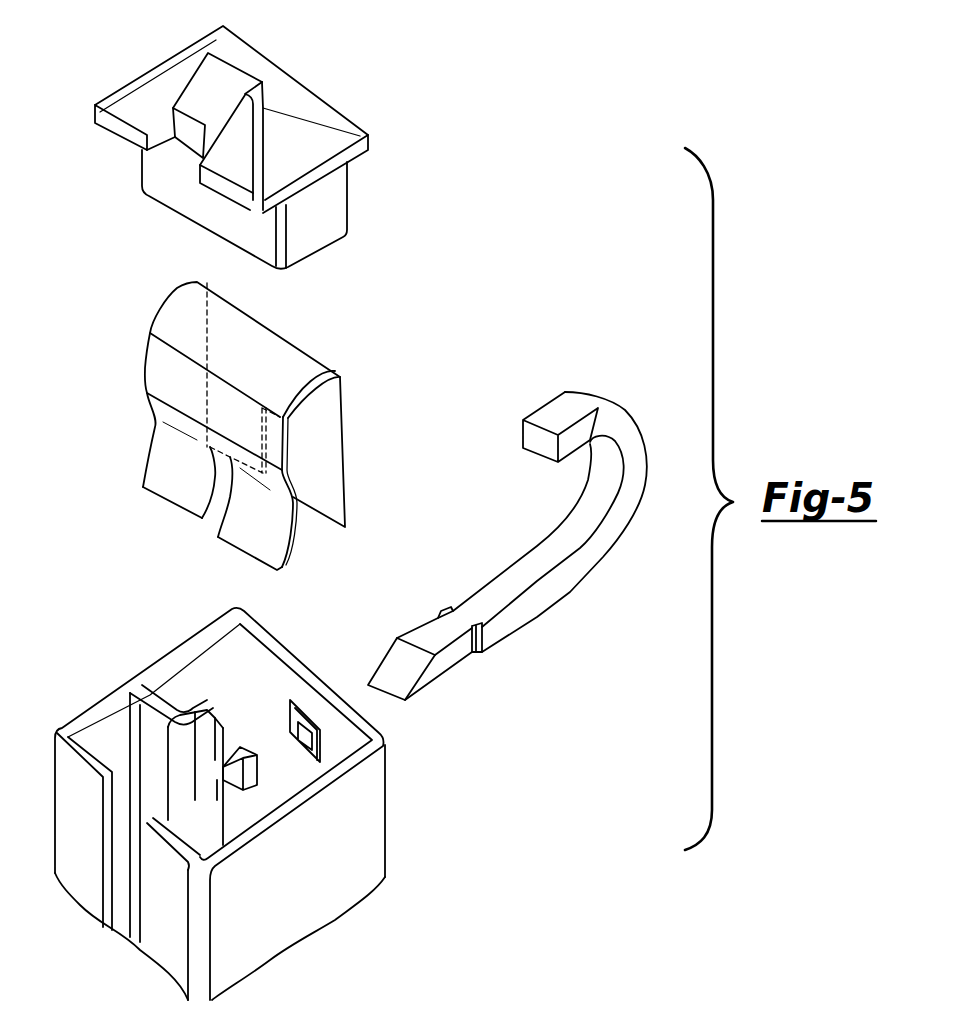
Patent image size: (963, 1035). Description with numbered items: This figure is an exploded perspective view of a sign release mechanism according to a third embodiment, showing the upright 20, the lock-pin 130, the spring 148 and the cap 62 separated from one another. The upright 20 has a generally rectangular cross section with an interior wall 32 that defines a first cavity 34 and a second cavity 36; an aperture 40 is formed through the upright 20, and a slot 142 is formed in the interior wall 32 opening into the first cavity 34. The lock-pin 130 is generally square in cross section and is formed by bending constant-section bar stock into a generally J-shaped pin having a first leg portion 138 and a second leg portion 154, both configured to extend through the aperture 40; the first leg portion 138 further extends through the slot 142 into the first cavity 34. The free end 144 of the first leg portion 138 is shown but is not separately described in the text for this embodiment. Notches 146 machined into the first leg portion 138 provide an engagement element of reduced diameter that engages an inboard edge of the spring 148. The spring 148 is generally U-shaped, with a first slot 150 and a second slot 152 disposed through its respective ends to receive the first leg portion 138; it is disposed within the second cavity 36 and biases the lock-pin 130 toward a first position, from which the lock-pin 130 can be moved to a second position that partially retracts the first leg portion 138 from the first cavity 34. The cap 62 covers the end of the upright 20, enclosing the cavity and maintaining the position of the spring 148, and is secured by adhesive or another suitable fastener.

The upright 20 is at (242, 796).
The interior wall 32 is at (143, 700).
The first cavity 34 is at (147, 742).
The second cavity 36 is at (278, 677).
The aperture 40 is at (308, 728).
The cap 62 is at (263, 65).
The lock-pin 130 is at (502, 521).
The first leg portion 138 is at (533, 610).
The slot 142 is at (222, 728).
The beveled end 144 is at (392, 673).
The notches 146 is at (448, 613).
The spring 148 is at (287, 353).
The first slot 150 is at (284, 467).
The second slot 152 is at (210, 515).
The second leg portion 154 is at (583, 436).